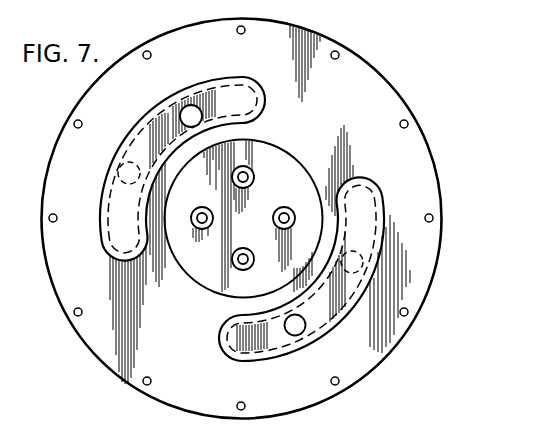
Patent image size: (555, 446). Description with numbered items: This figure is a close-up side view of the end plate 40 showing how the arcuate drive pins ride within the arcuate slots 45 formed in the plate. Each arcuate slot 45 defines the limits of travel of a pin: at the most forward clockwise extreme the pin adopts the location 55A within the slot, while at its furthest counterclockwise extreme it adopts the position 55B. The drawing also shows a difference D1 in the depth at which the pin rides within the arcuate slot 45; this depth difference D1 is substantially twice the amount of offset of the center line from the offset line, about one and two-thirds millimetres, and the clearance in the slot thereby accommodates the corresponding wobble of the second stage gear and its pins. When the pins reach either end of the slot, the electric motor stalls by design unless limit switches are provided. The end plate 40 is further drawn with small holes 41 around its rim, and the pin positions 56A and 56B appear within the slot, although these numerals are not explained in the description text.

The end plate 40 is at (398, 106).
The bolt holes 41 is at (412, 123).
The arcuate slot 45 is at (242, 79).
The forward clockwise pin position 55A is at (262, 110).
The furthest counterclockwise pin position 55B is at (112, 227).
The ball 56A is at (193, 112).
The ball (hidden) 56B is at (120, 174).
The depth difference D1 is at (177, 94).